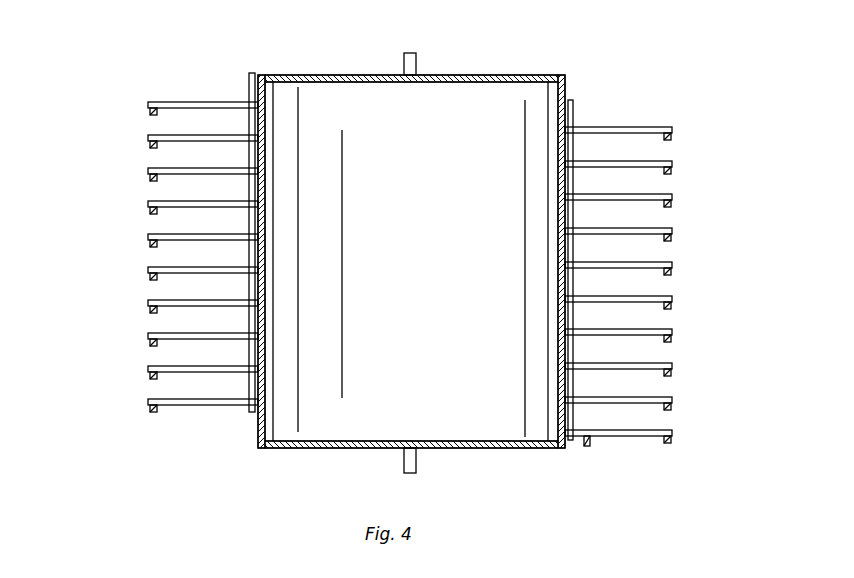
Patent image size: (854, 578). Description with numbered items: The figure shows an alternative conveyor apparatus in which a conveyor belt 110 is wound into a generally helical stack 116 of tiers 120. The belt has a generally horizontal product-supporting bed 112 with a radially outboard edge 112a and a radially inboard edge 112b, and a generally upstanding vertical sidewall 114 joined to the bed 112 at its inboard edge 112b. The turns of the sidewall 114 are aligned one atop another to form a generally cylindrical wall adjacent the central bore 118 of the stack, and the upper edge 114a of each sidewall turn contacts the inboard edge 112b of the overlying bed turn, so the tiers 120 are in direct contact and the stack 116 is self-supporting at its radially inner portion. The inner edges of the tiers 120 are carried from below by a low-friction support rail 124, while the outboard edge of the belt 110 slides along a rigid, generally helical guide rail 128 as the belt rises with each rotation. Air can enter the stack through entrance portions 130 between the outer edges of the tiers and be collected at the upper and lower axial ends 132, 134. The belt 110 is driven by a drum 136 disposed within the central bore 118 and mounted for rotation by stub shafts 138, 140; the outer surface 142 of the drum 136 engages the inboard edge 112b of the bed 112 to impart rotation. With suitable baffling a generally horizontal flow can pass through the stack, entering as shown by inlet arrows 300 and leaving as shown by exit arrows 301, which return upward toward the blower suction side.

The conveyor belt 110 is at (637, 123).
The bed 112 is at (165, 224).
The radially outboard edge 112a is at (172, 100).
The radially inboard edge 112b is at (246, 100).
The sidewall 114 is at (618, 257).
The upper edge of sidewall 114a is at (573, 270).
The helical stack 116 is at (672, 129).
The central bore 118 is at (566, 110).
The tiers 120 is at (670, 250).
The support rail 124 is at (586, 447).
The helical guide rail 128 is at (668, 175).
The entrance portions 130 is at (160, 311).
The upper axial end 132 is at (620, 115).
The lower axial end 134 is at (617, 445).
The drum 136 is at (470, 100).
The upper stub shaft 138 is at (418, 60).
The lower stub shaft 140 is at (417, 468).
The outer surface of drum 142 is at (258, 430).
The inlet arrows 300 is at (135, 146).
The exit arrows 301 is at (729, 247).